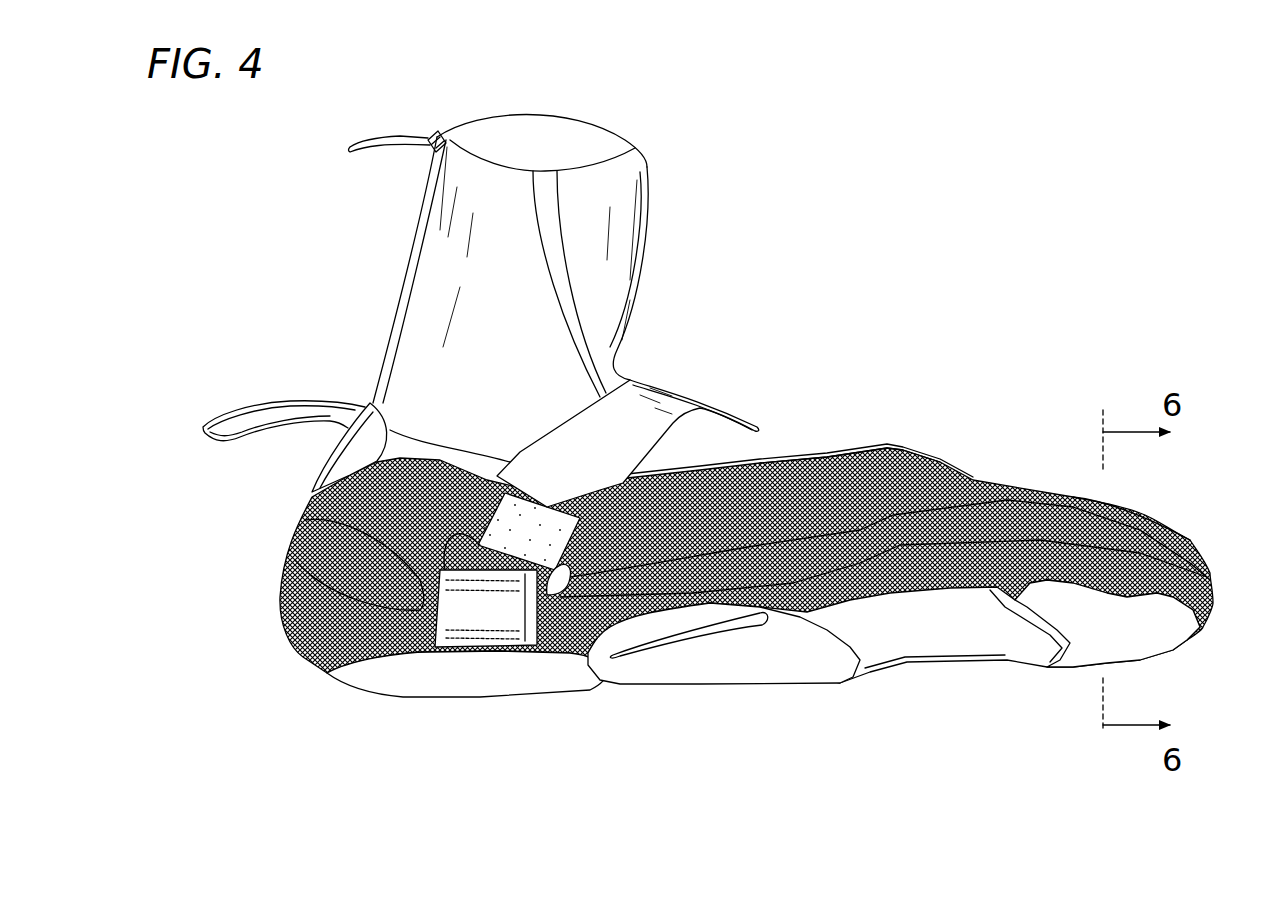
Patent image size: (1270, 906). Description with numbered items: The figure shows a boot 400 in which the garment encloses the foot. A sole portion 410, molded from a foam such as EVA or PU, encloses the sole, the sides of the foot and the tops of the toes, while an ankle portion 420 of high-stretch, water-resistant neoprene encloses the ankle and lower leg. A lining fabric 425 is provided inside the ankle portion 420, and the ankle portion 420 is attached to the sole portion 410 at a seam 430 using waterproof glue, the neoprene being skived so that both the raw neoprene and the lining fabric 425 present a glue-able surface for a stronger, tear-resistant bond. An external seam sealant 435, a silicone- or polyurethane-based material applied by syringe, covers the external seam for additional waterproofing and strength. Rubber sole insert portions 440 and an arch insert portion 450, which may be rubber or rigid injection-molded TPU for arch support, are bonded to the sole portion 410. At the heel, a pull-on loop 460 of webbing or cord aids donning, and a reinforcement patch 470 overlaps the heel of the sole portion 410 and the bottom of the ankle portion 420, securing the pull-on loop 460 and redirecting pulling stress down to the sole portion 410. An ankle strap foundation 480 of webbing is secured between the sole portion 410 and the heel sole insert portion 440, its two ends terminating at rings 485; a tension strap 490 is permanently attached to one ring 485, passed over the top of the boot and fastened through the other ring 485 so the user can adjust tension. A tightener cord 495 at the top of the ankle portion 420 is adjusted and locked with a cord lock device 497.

The boot 400 is at (876, 383).
The sole portion 410 is at (1098, 521).
The ankle portion 420 is at (656, 239).
The lining fabric 425 is at (572, 143).
The seam 430 is at (905, 451).
The external seam sealant 435 is at (860, 465).
The sole insert portions 440 is at (465, 675).
The arch insert portion 450 is at (798, 657).
The pull-on loop 460 is at (247, 410).
The reinforcement patch 470 is at (390, 405).
The ankle strap foundation 480 is at (563, 627).
The rings 485 is at (467, 518).
The tension strap 490 is at (664, 441).
The tightener cord 495 is at (392, 150).
The cord lock device 497 is at (441, 132).